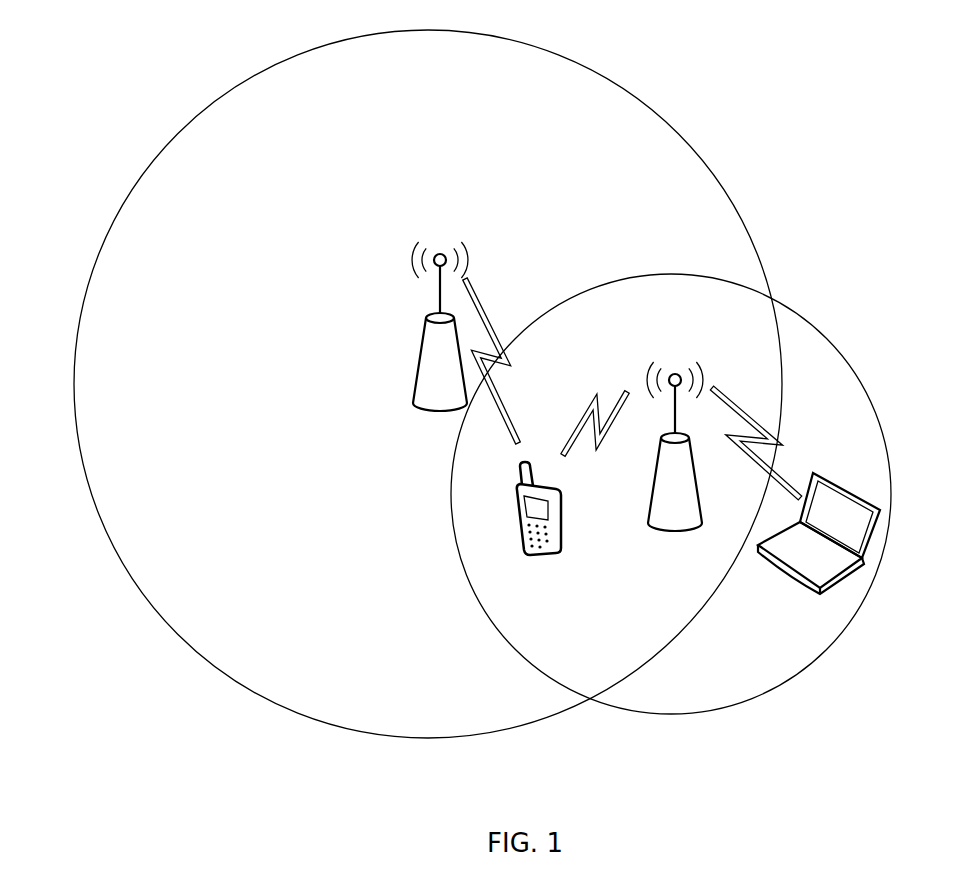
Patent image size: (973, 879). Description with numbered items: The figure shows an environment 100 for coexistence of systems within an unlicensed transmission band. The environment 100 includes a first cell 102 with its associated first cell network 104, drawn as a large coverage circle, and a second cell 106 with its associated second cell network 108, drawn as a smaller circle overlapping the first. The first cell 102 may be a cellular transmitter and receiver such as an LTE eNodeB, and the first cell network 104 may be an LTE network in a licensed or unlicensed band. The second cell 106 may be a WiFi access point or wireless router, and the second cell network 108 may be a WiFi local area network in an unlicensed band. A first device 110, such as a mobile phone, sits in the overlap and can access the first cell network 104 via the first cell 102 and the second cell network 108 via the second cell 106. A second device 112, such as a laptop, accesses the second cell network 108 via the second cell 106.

The environment 100 is at (145, 112).
The first cell 102 is at (408, 252).
The first cell network 104 is at (503, 33).
The second cell 106 is at (645, 362).
The second cell network 108 is at (865, 390).
The first device 110 is at (560, 555).
The second device 112 is at (793, 588).